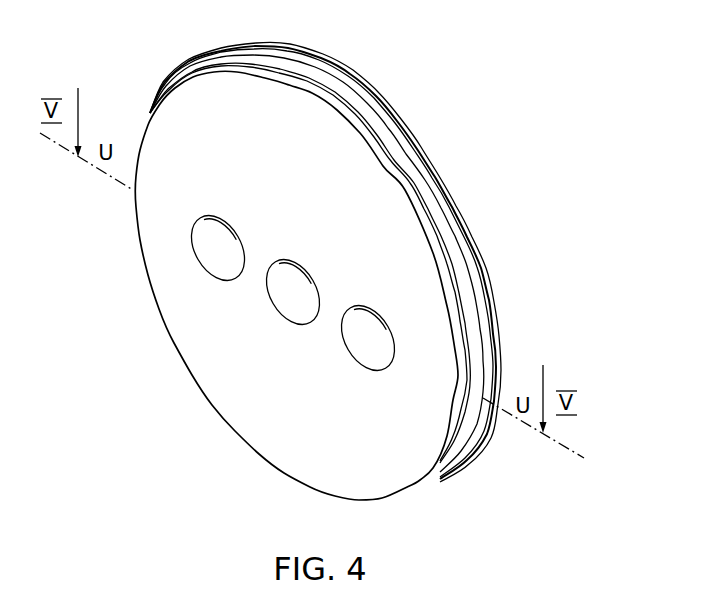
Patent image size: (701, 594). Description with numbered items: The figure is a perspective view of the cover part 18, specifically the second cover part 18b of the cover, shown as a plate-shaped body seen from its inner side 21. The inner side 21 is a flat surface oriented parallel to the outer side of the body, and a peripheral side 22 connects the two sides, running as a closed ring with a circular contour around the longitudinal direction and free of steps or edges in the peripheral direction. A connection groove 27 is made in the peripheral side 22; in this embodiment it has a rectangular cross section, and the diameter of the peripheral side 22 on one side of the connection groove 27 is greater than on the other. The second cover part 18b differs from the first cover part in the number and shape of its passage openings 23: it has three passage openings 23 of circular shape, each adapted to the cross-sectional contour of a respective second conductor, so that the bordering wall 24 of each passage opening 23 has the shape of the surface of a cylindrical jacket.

The cover part 18 is at (495, 58).
The second cover part 18b is at (326, 273).
The inner side 21 is at (250, 394).
The peripheral side 22 is at (465, 252).
The passage openings 23 is at (284, 316).
The bordering wall 24 is at (291, 282).
The connection groove 27 is at (388, 153).